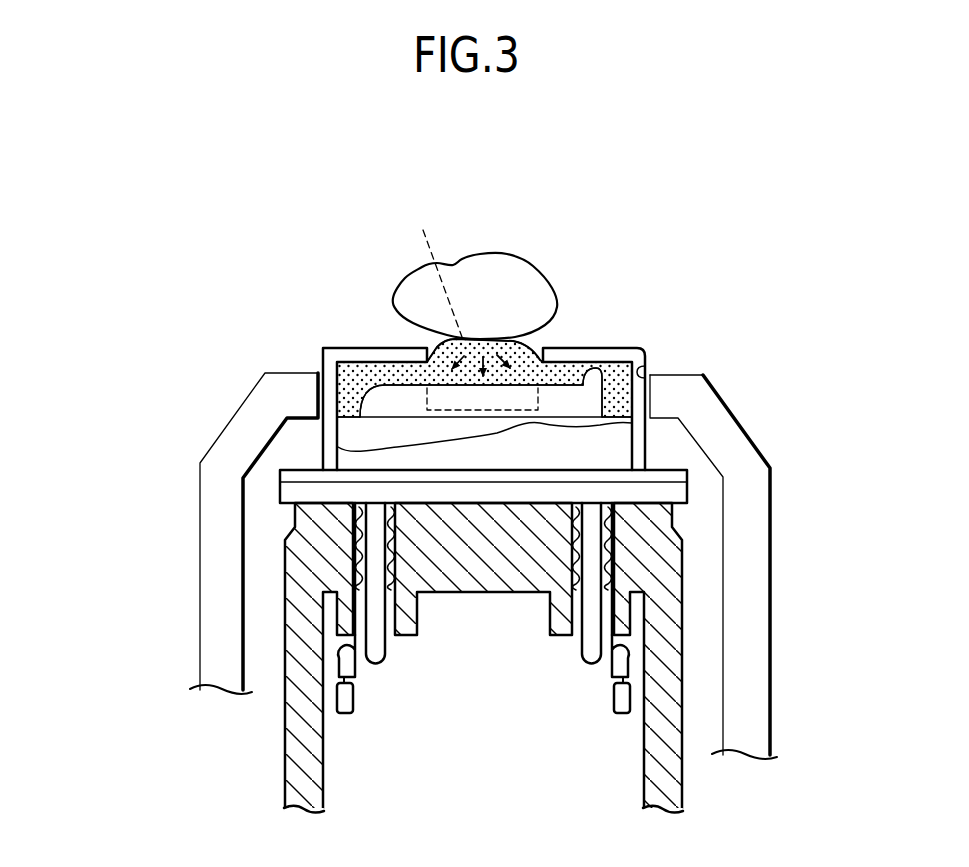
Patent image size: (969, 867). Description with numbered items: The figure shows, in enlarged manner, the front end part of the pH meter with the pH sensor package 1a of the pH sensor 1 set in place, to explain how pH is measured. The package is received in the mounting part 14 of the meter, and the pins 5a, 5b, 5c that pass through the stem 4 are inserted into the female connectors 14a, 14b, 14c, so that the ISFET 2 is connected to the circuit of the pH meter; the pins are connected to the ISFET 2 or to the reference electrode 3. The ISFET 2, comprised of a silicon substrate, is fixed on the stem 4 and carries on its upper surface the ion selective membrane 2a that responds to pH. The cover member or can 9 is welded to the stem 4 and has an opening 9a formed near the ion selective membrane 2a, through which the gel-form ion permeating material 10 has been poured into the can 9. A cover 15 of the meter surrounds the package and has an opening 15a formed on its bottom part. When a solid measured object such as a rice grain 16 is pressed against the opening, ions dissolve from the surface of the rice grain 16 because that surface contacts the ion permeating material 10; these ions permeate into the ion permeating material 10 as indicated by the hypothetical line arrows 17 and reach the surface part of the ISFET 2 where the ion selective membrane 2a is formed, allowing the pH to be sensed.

The pH sensor 1 is at (410, 387).
The pH sensor package 1a is at (318, 358).
The ISFET 2 is at (537, 428).
The ion selective membrane 2a is at (440, 372).
The reference electrode 3 is at (594, 368).
The stem 4 is at (682, 492).
The pin 5a is at (380, 626).
The pin 5b is at (376, 665).
The pin 5c is at (590, 668).
The cover member (can) 9 is at (623, 349).
The opening 9a is at (430, 353).
The gel-form ion permeating material 10 is at (358, 366).
The mounting part 14 is at (683, 664).
The female connector 14a is at (231, 569).
The female connector 14b is at (357, 545).
The female connector 14c is at (612, 545).
The cover 15 is at (770, 622).
The opening 15a is at (648, 363).
The rice grain 16 is at (491, 266).
The hypothetical line arrows 17 is at (459, 287).